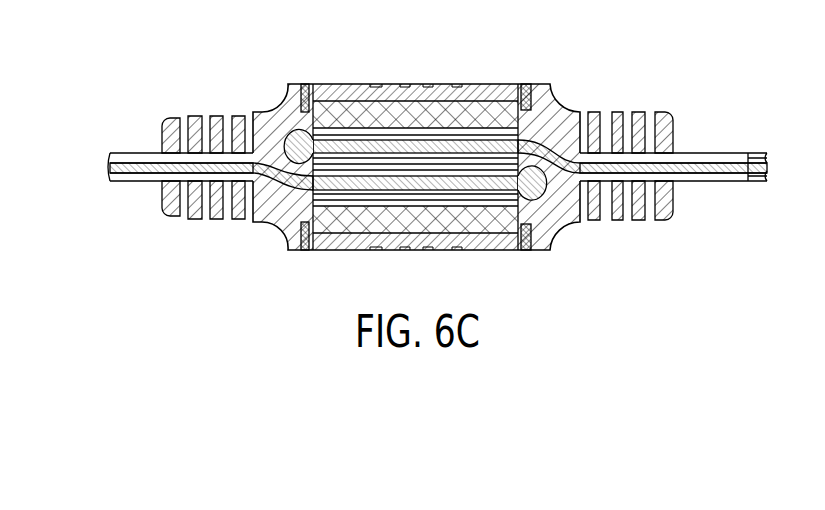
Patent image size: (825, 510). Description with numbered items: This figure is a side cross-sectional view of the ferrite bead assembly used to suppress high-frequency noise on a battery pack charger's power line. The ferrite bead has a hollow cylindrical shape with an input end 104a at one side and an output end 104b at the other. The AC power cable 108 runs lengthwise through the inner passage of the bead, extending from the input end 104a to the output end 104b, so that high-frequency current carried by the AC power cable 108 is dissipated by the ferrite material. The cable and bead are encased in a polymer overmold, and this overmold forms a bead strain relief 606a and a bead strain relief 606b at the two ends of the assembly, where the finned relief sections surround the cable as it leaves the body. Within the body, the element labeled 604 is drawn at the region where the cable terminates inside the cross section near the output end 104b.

The input end 104a is at (310, 124).
The output end 104b is at (540, 125).
The AC power cable 108 is at (427, 147).
The conductor termination 604 is at (537, 190).
The bead strain relief 606a is at (216, 222).
The bead strain relief 606b is at (638, 221).